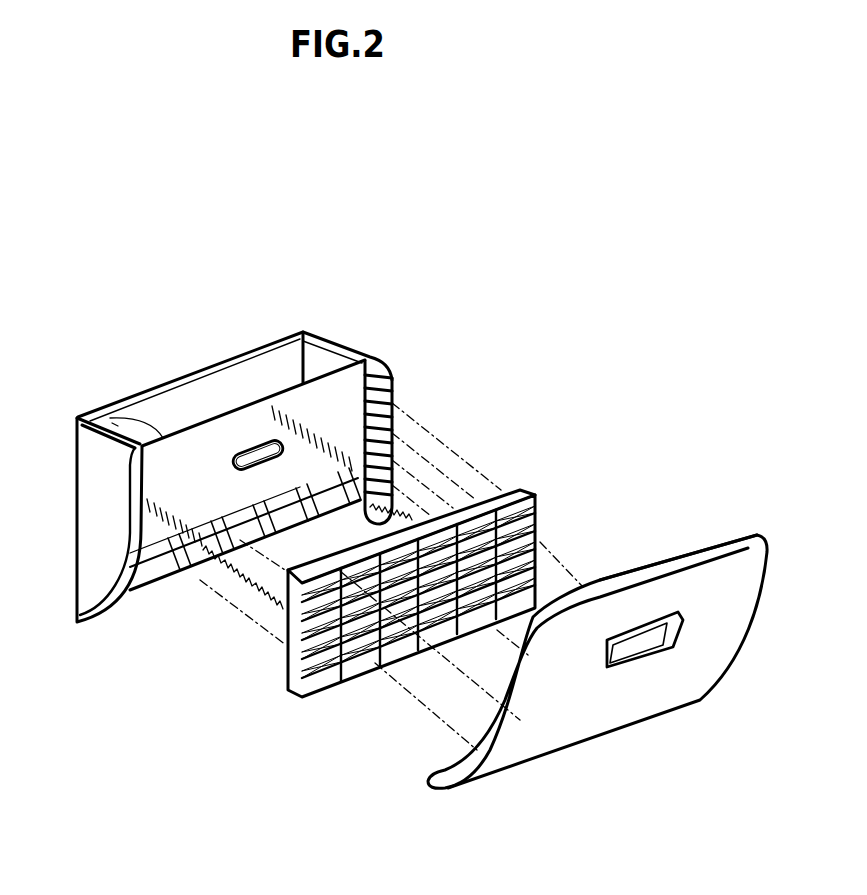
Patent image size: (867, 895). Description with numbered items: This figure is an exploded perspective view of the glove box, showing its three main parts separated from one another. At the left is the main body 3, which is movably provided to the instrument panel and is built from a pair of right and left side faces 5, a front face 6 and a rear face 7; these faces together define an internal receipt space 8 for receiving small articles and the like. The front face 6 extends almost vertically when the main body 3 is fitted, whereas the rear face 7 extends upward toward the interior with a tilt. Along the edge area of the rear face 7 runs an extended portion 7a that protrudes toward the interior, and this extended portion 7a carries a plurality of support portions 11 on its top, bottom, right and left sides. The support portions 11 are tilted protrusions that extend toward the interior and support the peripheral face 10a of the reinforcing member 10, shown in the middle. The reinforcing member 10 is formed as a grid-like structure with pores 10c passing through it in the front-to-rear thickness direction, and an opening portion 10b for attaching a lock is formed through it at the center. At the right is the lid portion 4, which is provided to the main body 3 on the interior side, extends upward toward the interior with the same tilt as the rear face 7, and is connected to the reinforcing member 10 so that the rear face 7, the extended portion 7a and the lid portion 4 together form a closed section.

The main body 3 is at (277, 357).
The lid portion 4 is at (690, 683).
The side faces 5 is at (327, 355).
The front face 6 is at (138, 400).
The rear face 7 is at (228, 443).
The extended portion 7a is at (93, 410).
The internal receipt space 8 is at (230, 375).
The reinforcing member 10 is at (451, 606).
The peripheral face 10a is at (508, 492).
The opening portion 10b is at (497, 553).
The pores 10c is at (350, 685).
The support portions 11 is at (363, 460).